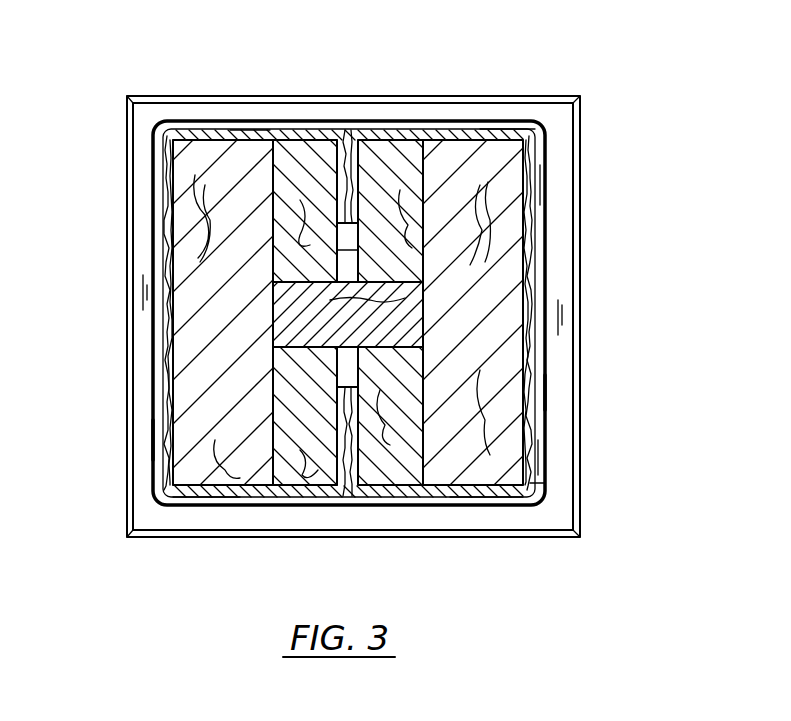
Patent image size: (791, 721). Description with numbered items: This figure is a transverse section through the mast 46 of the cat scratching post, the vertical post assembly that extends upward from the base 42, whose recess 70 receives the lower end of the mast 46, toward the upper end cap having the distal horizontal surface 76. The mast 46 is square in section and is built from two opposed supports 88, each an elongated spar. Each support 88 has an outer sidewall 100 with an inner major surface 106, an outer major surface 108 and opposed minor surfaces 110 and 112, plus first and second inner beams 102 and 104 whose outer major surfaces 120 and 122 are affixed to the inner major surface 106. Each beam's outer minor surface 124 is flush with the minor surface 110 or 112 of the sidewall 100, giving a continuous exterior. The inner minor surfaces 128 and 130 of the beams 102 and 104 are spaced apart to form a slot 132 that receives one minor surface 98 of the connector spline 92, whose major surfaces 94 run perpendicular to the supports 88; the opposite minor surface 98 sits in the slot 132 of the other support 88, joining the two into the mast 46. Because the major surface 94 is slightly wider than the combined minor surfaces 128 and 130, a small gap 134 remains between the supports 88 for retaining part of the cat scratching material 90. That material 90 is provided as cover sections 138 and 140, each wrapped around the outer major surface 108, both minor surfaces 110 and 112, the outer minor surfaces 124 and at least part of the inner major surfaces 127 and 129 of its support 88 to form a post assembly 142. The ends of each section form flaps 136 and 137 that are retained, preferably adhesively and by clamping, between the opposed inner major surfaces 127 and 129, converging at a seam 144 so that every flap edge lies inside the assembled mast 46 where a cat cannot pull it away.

The base 42 is at (578, 95).
The mast 46 is at (535, 277).
The recess 70 is at (540, 458).
The distal horizontal surface 76 is at (537, 484).
The support 88 is at (155, 438).
The cat scratching material 90 is at (165, 345).
The connector spline 92 is at (380, 341).
The major surface 94 is at (293, 268).
The minor surface 98 is at (262, 338).
The outer sidewall 100 is at (165, 400).
The first inner beam 102 is at (297, 490).
The second inner beam 104 is at (283, 140).
The inner major surface 106 is at (277, 402).
The outer major surface 108 is at (155, 420).
The minor surface 110 is at (205, 140).
The minor surface 112 is at (202, 490).
The outer major surface 120 is at (273, 166).
The outer major surface 122 is at (271, 427).
The outer minor surface 124 is at (312, 130).
The inner major surface 127 is at (355, 230).
The inner minor surface 128 is at (277, 288).
The inner major surface 129 is at (341, 370).
The inner minor surface 130 is at (268, 367).
The slot 132 is at (277, 310).
The gap 134 is at (350, 253).
The flap 136 is at (338, 166).
The flap 137 is at (358, 168).
The cover section 138 is at (247, 130).
The cover section 140 is at (508, 135).
The post assembly 142 is at (540, 184).
The seam 144 is at (350, 128).